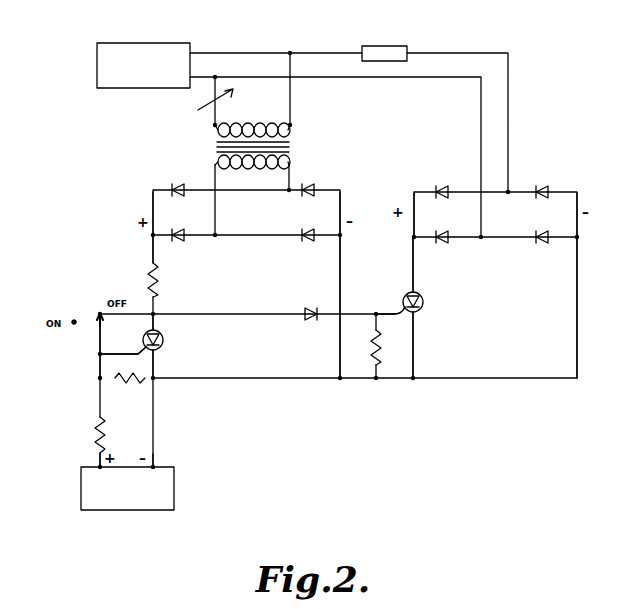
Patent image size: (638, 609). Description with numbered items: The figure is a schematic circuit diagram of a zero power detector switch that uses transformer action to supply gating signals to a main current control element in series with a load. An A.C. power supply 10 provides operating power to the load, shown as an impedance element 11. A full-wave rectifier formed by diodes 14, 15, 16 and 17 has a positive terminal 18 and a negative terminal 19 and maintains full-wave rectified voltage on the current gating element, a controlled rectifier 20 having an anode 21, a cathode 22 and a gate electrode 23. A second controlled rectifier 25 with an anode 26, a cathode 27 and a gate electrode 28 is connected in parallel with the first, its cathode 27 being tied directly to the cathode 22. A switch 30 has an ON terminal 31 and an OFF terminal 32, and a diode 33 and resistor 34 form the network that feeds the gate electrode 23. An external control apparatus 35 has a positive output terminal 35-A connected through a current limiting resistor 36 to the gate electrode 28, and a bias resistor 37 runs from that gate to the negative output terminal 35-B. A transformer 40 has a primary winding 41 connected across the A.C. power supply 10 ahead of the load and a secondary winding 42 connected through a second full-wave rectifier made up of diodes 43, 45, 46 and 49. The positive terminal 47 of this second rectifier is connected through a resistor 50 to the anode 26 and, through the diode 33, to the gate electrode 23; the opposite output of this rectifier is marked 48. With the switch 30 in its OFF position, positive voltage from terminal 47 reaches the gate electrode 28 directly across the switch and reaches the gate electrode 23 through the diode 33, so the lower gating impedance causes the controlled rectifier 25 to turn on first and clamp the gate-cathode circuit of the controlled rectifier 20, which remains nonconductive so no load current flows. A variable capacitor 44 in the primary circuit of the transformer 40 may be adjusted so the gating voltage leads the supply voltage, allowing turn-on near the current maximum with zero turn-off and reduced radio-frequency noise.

The A.C. power supply 10 is at (186, 44).
The impedance element 11 is at (403, 47).
The diode 14 is at (441, 188).
The diode 15 is at (540, 188).
The diode 16 is at (441, 232).
The diode 17 is at (540, 233).
The positive terminal 18 is at (414, 229).
The negative terminal 19 is at (578, 231).
The controlled rectifier 20 is at (424, 303).
The anode 21 is at (420, 293).
The cathode 22 is at (415, 331).
The gate electrode 23 is at (395, 311).
The second controlled rectifier 25 is at (164, 340).
The anode 26 is at (156, 322).
The cathode 27 is at (156, 363).
The gate electrode 28 is at (139, 353).
The switch 30 is at (98, 354).
The ON terminal 31 is at (71, 318).
The OFF terminal 32 is at (98, 310).
The diode 33 is at (312, 321).
The resistor 34 is at (380, 361).
The external control apparatus 35 is at (100, 511).
The positive output terminal 35-A is at (98, 460).
The negative output terminal 35-B is at (158, 460).
The current limiting resistor 36 is at (98, 437).
The bias resistor 37 is at (130, 383).
The transformer 40 is at (291, 150).
The primary winding 41 is at (250, 124).
The secondary winding 42 is at (250, 170).
The diode 43 is at (177, 186).
The variable capacitor 44 is at (205, 100).
The diode 45 is at (183, 241).
The diode 46 is at (308, 242).
The positive terminal 47 is at (152, 204).
The negative output terminal of first bridge 48 is at (341, 210).
The diode 49 is at (312, 187).
The resistor 50 is at (157, 283).